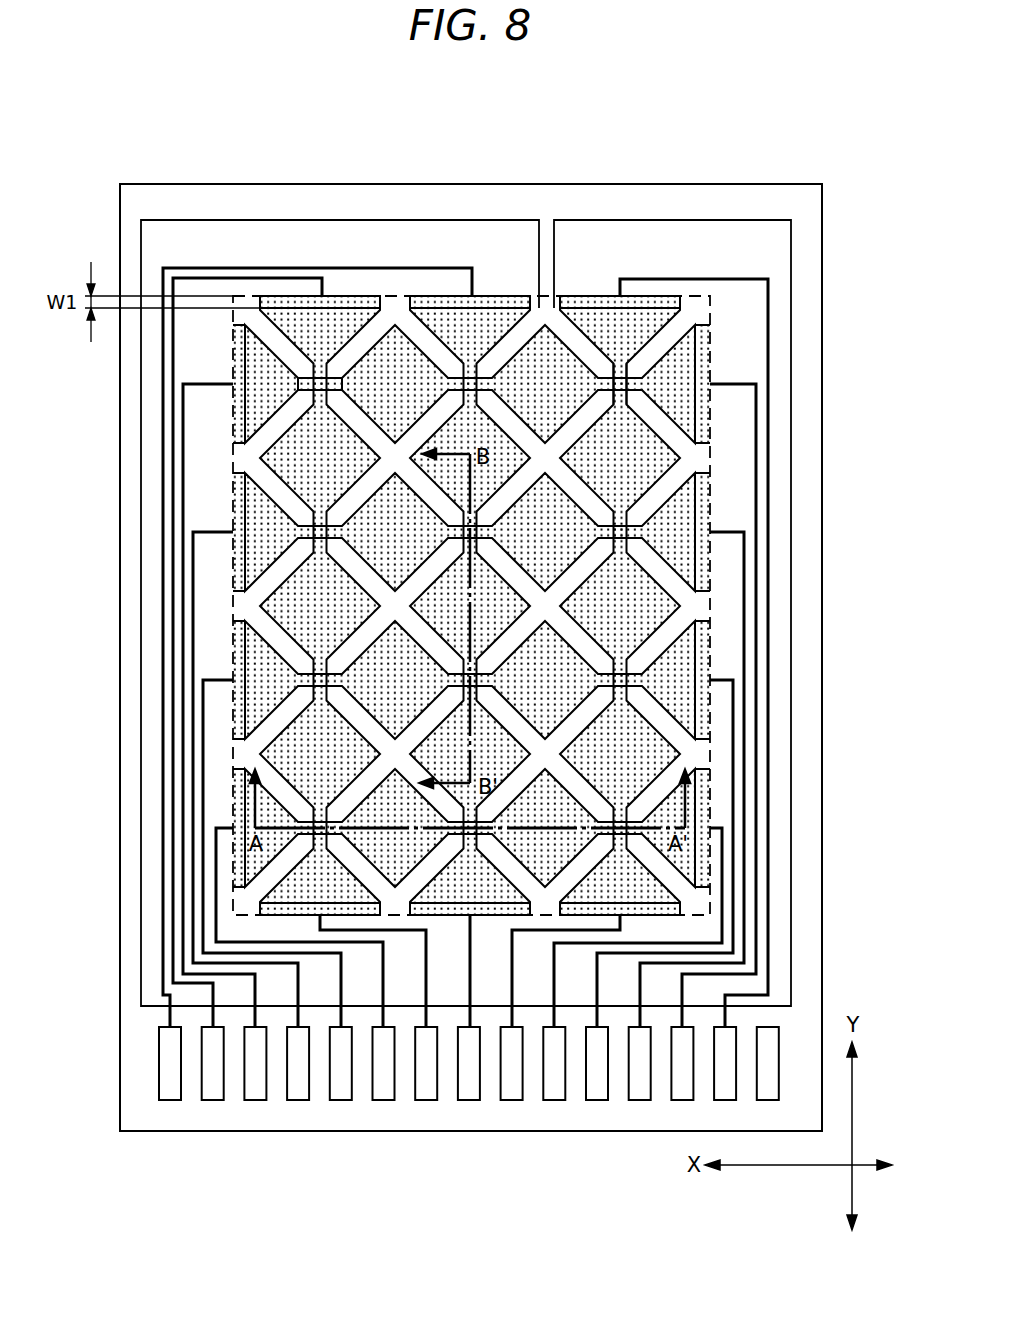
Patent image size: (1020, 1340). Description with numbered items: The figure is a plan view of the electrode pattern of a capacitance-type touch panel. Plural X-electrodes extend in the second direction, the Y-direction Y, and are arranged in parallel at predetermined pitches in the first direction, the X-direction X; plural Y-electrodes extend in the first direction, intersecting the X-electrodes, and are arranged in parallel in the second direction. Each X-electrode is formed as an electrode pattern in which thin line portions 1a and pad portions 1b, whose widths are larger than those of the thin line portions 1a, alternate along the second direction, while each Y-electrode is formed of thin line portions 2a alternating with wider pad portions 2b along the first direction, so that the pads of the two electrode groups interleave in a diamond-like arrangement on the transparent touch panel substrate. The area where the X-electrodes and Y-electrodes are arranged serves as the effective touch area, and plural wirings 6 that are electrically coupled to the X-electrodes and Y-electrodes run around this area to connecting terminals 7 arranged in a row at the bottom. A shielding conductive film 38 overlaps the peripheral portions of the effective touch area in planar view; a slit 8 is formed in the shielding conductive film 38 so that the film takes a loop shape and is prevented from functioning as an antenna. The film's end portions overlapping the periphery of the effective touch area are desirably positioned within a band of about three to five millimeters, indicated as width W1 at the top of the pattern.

The thin line portion 1a is at (622, 363).
The pad portion 1b is at (640, 440).
The thin line portion 2a is at (320, 383).
The pad portion 2b is at (393, 347).
The wirings 6 is at (770, 310).
The connecting terminals 7 is at (167, 1063).
The slit 8 is at (546, 237).
The shielding conductive film 38 is at (749, 238).
The X-direction X is at (566, 518).
The Y-direction Y is at (549, 510).